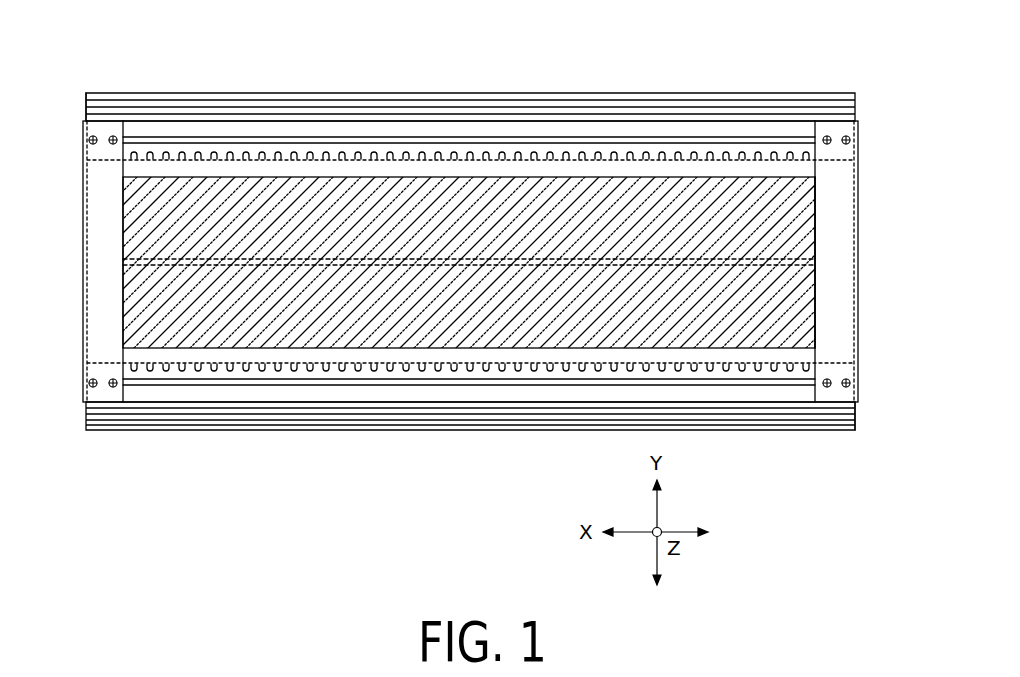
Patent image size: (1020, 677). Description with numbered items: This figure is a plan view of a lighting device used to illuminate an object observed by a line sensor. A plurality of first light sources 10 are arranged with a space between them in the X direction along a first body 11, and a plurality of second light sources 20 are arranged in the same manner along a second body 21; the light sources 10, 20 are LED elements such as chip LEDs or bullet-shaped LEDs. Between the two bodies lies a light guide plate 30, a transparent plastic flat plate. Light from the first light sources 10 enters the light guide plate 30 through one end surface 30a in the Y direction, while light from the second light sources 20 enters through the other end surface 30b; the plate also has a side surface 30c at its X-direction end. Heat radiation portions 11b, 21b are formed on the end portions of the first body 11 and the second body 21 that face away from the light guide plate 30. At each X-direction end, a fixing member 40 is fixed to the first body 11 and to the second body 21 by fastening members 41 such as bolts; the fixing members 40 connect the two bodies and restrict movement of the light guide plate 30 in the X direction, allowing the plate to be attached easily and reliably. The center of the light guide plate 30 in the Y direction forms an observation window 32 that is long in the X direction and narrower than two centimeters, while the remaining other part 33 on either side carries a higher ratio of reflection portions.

The first light sources 10 is at (166, 150).
The first body 11 is at (320, 130).
The heat radiation portion 11b is at (88, 98).
The second light sources 20 is at (148, 372).
The second body 21 is at (380, 396).
The heat radiation portion 21b is at (300, 418).
The light guide plate 30 is at (858, 145).
The end surface 30a is at (190, 150).
The end surface 30b is at (190, 372).
The side wall of frame 30c is at (803, 230).
The observation window 32 is at (123, 259).
The other part 33 is at (137, 232).
The fixing members 40 is at (83, 144).
The fastening member 41 is at (110, 139).